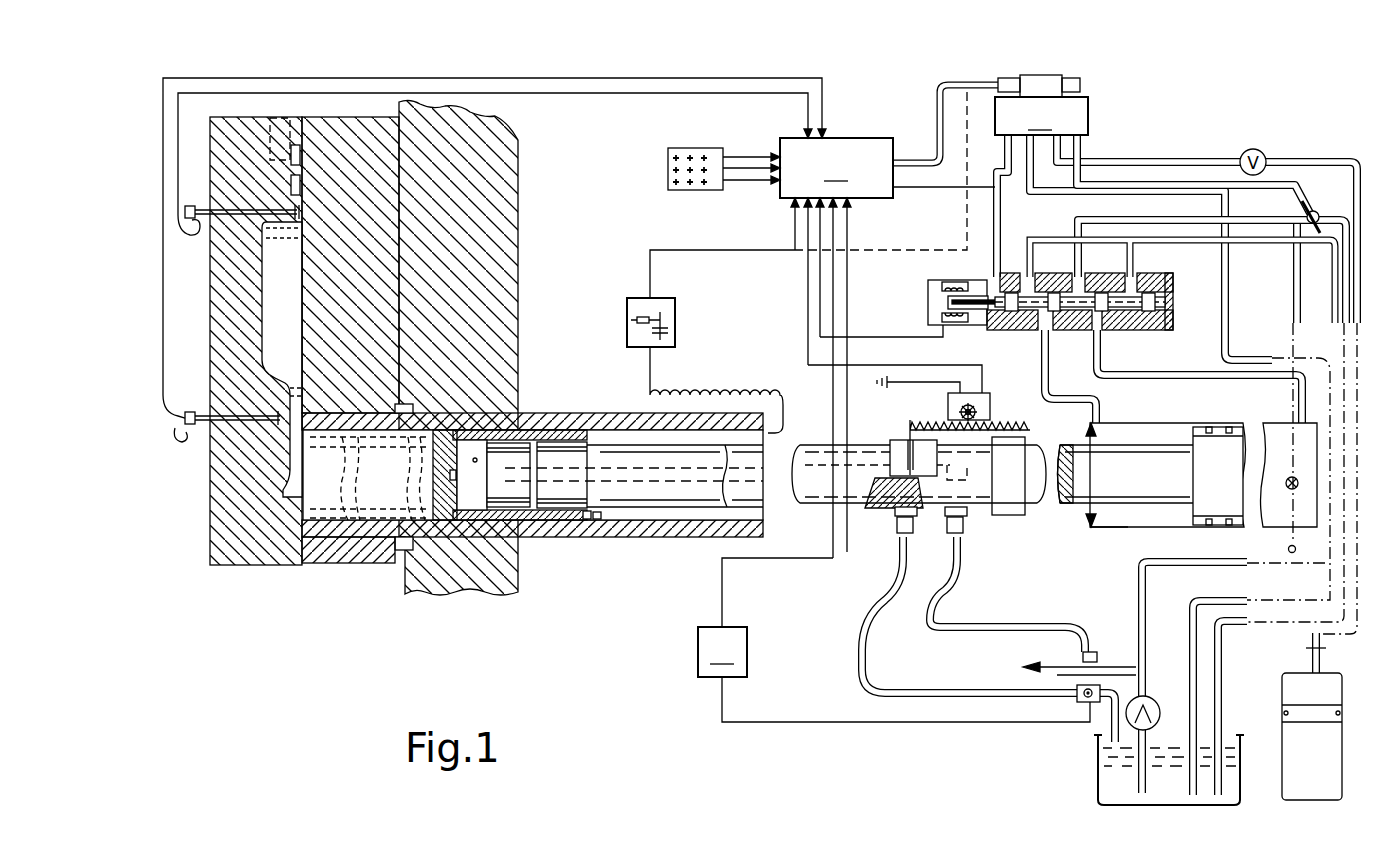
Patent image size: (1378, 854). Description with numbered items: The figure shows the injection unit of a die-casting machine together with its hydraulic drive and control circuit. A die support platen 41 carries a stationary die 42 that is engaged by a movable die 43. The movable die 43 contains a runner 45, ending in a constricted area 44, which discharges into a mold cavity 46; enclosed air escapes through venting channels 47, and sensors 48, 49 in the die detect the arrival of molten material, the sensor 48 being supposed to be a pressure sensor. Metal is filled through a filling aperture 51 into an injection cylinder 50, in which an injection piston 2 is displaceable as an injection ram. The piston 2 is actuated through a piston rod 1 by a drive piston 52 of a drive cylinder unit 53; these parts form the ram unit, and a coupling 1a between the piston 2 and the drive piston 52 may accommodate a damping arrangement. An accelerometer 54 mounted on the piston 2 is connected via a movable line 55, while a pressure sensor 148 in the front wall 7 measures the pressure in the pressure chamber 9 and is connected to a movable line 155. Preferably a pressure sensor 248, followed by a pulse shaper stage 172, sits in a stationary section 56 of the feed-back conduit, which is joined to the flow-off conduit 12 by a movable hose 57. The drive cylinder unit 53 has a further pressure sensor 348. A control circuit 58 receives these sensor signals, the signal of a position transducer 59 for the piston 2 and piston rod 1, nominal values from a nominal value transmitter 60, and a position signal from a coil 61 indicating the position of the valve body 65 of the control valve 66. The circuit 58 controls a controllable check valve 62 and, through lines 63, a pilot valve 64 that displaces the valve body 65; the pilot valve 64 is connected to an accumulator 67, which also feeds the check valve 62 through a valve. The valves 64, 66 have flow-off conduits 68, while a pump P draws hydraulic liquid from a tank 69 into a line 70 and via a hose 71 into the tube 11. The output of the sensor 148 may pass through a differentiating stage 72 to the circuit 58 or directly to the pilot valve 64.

The piston rod 1 is at (800, 447).
The coupling 1a is at (1005, 518).
The injection piston 2 is at (425, 496).
The front wall 7 is at (440, 506).
The pressure chamber 9 is at (477, 458).
The tube 11 is at (690, 540).
The flow-off conduit 12 is at (887, 502).
The die support platen 41 is at (505, 200).
The stationary die 42 is at (325, 550).
The movable die 43 is at (245, 545).
The constricted area 44 is at (268, 341).
The runner 45 is at (293, 461).
The mold cavity 46 is at (268, 296).
The venting channels 47 is at (297, 182).
The sensor 48 is at (285, 424).
The sensor 49 is at (252, 215).
The injection cylinder 50 is at (586, 520).
The filling aperture 51 is at (690, 418).
The drive piston 52 is at (1213, 456).
The drive cylinder unit 53 is at (1113, 532).
The accelerometer 54 is at (605, 520).
The movable line 55 is at (794, 514).
The stationary section 56 is at (1122, 742).
The movable hose 57 is at (878, 662).
The control circuit 58 is at (808, 325).
The position transducer 59 is at (926, 397).
The nominal value transmitter 60 is at (695, 150).
The coil 61 is at (955, 286).
The controllable check valve 62 is at (1316, 211).
The lines 63 is at (935, 99).
The pilot valve 64 is at (1041, 105).
The valve body 65 is at (1014, 275).
The control valve 66 is at (1173, 292).
The accumulator 67 is at (1282, 702).
The flow-off conduits 68 is at (1231, 290).
The tank 69 is at (1238, 767).
The line 70 is at (1290, 306).
The hose 71 is at (998, 614).
The differentiating stage 72 is at (677, 318).
The pressure sensor 148 is at (523, 592).
The movable line 155 is at (733, 390).
The pulse shaper stage 172 is at (894, 640).
The pressure sensor 248 is at (1086, 704).
The pressure sensor 348 is at (1280, 466).
The pump P is at (1157, 706).